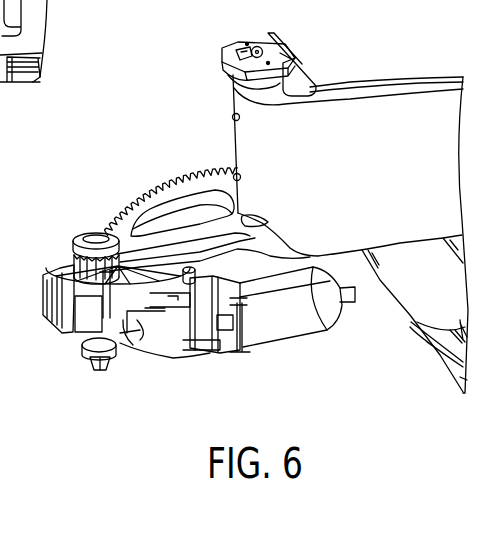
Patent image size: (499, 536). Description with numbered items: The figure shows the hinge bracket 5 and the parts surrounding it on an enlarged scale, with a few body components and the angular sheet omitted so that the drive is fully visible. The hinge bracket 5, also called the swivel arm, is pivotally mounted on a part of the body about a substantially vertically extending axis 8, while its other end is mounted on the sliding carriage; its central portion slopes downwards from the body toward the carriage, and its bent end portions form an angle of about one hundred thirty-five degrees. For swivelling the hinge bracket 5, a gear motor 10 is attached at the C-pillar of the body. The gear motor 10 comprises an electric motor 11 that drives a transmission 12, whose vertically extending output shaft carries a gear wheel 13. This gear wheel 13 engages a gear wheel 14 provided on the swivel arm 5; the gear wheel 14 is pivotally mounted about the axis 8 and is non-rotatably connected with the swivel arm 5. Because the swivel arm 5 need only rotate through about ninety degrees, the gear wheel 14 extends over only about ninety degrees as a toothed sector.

The hinge bracket 5 is at (365, 118).
The axis 8 is at (252, 143).
The gear motor 10 is at (152, 385).
The electric motor 11 is at (293, 323).
The transmission 12 is at (82, 327).
The gear wheel 13 is at (72, 266).
The gear wheel 14 is at (160, 193).